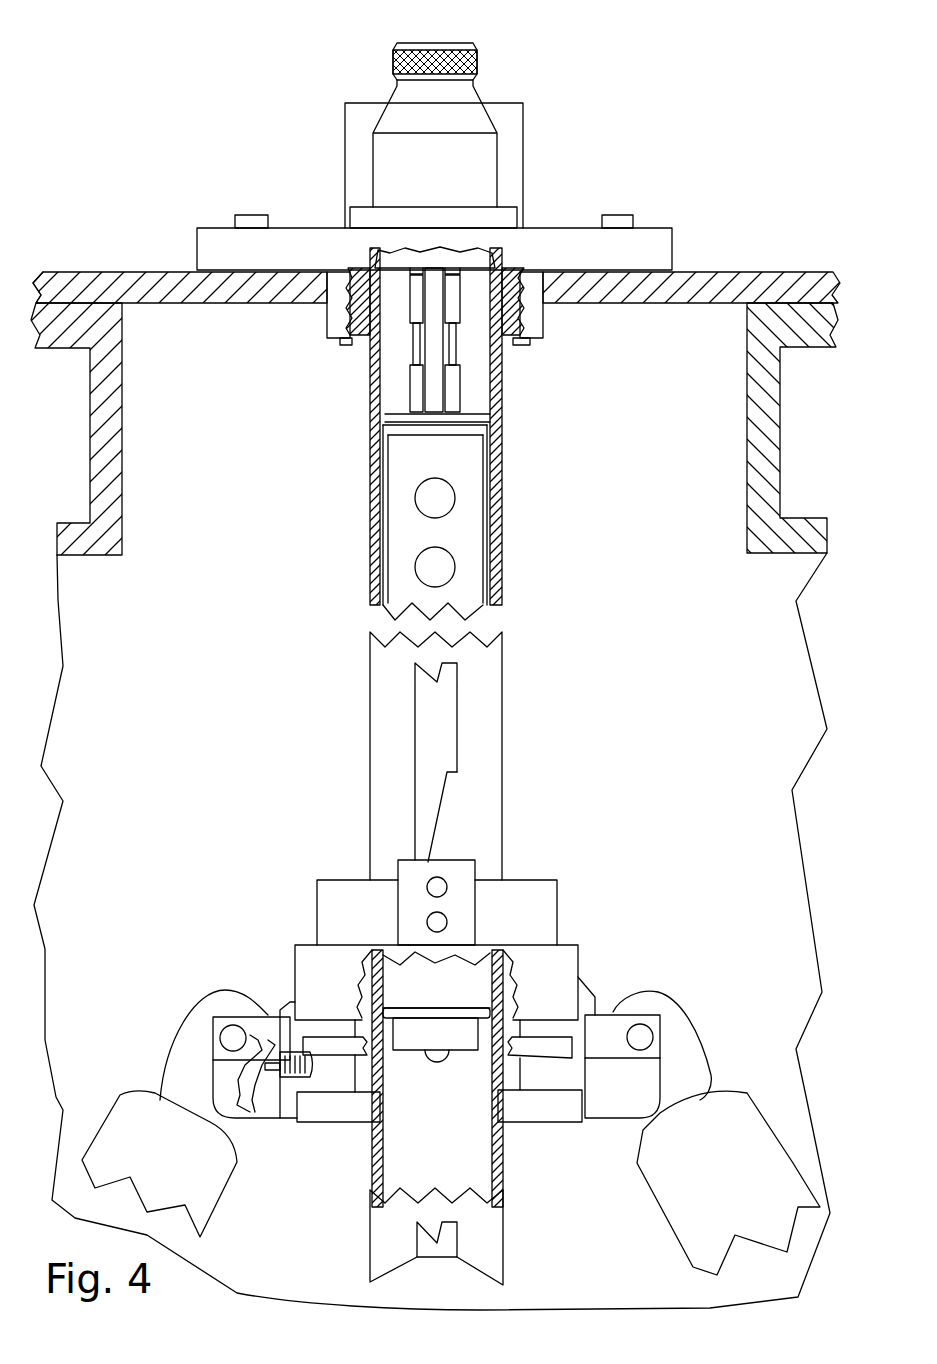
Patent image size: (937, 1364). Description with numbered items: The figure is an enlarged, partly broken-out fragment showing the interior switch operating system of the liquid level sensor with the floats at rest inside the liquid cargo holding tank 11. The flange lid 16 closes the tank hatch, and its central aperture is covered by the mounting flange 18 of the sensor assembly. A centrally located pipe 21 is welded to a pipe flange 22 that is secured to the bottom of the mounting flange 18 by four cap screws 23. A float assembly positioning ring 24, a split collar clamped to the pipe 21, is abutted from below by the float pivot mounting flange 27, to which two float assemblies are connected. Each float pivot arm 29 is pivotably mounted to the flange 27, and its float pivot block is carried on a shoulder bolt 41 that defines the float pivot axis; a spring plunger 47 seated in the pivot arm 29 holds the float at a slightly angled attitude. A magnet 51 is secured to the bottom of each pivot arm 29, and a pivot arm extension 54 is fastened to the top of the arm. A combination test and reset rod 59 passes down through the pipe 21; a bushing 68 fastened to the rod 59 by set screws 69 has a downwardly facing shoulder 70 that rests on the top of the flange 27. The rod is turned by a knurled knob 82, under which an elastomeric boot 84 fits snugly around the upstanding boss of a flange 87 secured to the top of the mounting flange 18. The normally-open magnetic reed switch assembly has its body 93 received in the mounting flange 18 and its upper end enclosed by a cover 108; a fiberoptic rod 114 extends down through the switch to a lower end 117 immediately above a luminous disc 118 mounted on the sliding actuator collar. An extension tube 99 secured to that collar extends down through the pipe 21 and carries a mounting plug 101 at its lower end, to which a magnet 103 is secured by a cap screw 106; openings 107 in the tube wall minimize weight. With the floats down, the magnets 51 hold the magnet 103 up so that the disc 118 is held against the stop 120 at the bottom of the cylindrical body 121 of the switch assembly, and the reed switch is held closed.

The liquid cargo holding tank 11 is at (152, 697).
The flange lid 16 is at (137, 280).
The mounting flange 18 is at (602, 247).
The pipe 21 is at (488, 725).
The pipe flange 22 is at (535, 313).
The cap screws 23 is at (520, 350).
The float assembly positioning ring 24 is at (543, 888).
The float pivot mounting flange 27 is at (568, 973).
The float pivot arm 29 is at (221, 1088).
The shoulder bolt 41 is at (228, 1043).
The spring plunger 47 is at (292, 1090).
The magnet 51 is at (332, 1110).
The pivot arm extension 54 is at (323, 1045).
The combination test and reset rod 59 is at (445, 728).
The bushing 68 is at (447, 772).
The set screws 69 is at (437, 918).
The downwardly facing shoulder 70 is at (420, 948).
The knurled knob 82 is at (393, 53).
The elastomeric boot 84 is at (423, 118).
The flange 87 is at (498, 218).
The body 93 is at (400, 258).
The extension tube 99 is at (455, 467).
The mounting plug 101 is at (462, 1010).
The magnet 103 is at (408, 1040).
The cap screw 106 is at (437, 1058).
The openings 107 is at (433, 572).
The cover 108 is at (355, 157).
The fiberoptic rod 114 is at (437, 380).
The lower end 117 is at (440, 427).
The luminous disc 118 is at (377, 463).
The stop 120 is at (380, 427).
The cylindrical body 121 is at (418, 340).